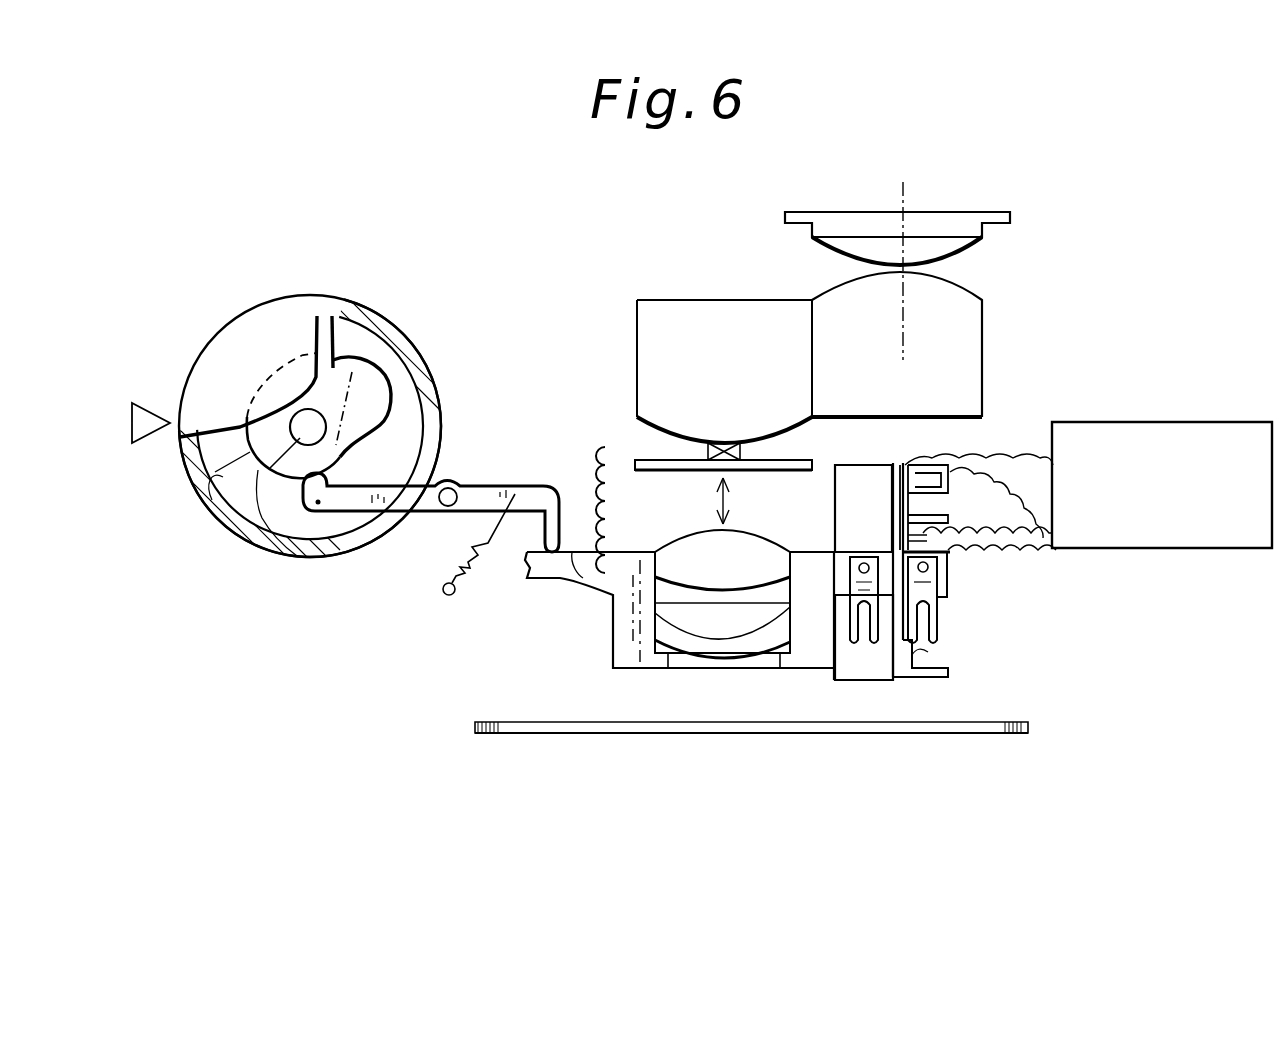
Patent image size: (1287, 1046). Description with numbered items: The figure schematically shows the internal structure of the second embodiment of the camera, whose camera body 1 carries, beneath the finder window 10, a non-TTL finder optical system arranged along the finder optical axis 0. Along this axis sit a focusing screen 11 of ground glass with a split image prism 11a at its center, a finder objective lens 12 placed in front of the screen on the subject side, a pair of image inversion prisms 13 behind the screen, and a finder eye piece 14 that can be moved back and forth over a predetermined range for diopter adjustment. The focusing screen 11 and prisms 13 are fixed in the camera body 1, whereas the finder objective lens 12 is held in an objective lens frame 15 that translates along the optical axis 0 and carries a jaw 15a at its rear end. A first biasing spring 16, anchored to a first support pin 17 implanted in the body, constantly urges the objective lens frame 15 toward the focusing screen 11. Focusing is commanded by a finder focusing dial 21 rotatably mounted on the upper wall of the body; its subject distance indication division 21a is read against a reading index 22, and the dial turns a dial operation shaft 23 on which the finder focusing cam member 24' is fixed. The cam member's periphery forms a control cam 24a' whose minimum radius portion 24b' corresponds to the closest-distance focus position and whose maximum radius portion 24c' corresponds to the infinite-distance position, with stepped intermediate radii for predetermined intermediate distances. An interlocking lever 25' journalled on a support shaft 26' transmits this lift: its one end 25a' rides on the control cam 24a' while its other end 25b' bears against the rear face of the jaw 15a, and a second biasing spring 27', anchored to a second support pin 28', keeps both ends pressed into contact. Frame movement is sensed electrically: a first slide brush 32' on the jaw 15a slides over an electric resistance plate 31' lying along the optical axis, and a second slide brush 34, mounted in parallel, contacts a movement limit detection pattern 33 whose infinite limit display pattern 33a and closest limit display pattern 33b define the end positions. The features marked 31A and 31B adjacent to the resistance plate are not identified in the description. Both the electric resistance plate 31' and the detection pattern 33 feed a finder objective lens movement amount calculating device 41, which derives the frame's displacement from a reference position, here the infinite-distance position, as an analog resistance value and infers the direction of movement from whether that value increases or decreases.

The camera body 1 is at (565, 733).
The finder window 10 is at (745, 735).
The focusing screen 11 is at (640, 462).
The split image prism 11a is at (717, 443).
The finder objective lens 12 is at (742, 645).
The image inversion prisms 13 is at (768, 327).
The finder eye piece 14 is at (955, 222).
The finder optical axis 0 is at (905, 300).
The objective lens frame 15 is at (815, 640).
The jaw 15a is at (947, 570).
The first biasing spring 16 is at (577, 578).
The first support pin 17 is at (600, 447).
The finder focusing dial 21 is at (245, 325).
The subject distance indication division 21a is at (215, 362).
The reading index 22 is at (148, 408).
The dial operation shaft 23 is at (258, 512).
The finder focusing cam member 24' is at (285, 337).
The control cam 24a' is at (159, 490).
The minimum radius portion 24b' is at (225, 573).
The maximum radius portion 24c' is at (364, 296).
The interlocking lever 25' is at (431, 414).
The one end of interlocking lever 25a' is at (292, 579).
The other end of interlocking lever 25b' is at (537, 464).
The support shaft 26' is at (460, 435).
The second biasing spring 27' is at (446, 544).
The second support pin 28' is at (415, 633).
The electric resistance plate 31' is at (854, 713).
The movable contact member 31A is at (835, 496).
The fixed contact member 31B is at (898, 482).
The first slide brush 32' is at (946, 626).
The movement limit detection pattern 33 is at (930, 672).
The infinite limit display pattern 33a is at (935, 528).
The closest limit display pattern 33b is at (945, 680).
The second slide brush 34 is at (937, 585).
The finder objective lens movement amount calculating device 41 is at (1225, 548).